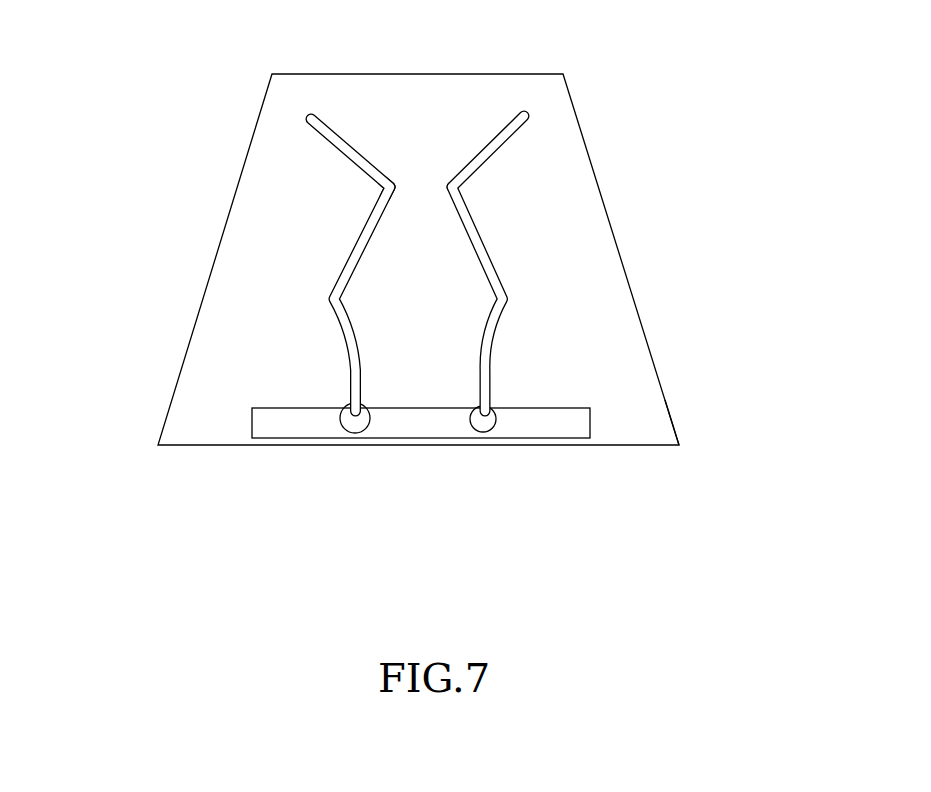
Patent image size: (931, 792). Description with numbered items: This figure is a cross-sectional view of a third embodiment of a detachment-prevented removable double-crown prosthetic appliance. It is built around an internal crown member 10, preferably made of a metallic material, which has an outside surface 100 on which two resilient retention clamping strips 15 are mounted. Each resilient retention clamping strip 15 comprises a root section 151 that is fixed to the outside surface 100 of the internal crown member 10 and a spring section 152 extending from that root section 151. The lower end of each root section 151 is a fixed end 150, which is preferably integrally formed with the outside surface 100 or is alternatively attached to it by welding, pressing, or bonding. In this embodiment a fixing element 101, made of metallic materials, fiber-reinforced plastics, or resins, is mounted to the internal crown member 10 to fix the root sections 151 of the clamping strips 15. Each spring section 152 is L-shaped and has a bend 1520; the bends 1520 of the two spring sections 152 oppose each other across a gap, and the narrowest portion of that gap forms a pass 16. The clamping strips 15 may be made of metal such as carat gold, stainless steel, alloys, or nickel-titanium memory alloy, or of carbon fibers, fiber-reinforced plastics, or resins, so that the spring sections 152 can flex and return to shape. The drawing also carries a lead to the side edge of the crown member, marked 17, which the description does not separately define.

The internal crown member 10 is at (405, 290).
The outside surface 100 is at (225, 378).
The fixing element 101 is at (548, 420).
The resilient retention clamping strip 15 is at (470, 256).
The fixed end 150 is at (353, 418).
The root section 151 is at (347, 345).
The spring section 152 is at (348, 152).
The bend 1520 is at (397, 187).
The pass 16 is at (420, 185).
The side edge 17 is at (673, 418).